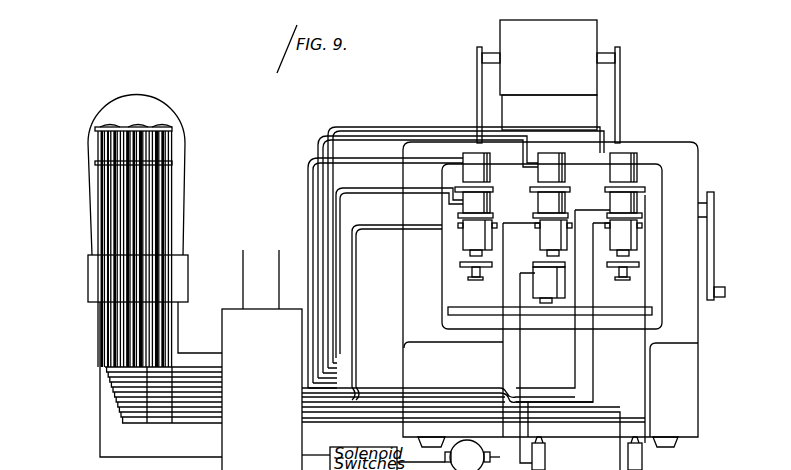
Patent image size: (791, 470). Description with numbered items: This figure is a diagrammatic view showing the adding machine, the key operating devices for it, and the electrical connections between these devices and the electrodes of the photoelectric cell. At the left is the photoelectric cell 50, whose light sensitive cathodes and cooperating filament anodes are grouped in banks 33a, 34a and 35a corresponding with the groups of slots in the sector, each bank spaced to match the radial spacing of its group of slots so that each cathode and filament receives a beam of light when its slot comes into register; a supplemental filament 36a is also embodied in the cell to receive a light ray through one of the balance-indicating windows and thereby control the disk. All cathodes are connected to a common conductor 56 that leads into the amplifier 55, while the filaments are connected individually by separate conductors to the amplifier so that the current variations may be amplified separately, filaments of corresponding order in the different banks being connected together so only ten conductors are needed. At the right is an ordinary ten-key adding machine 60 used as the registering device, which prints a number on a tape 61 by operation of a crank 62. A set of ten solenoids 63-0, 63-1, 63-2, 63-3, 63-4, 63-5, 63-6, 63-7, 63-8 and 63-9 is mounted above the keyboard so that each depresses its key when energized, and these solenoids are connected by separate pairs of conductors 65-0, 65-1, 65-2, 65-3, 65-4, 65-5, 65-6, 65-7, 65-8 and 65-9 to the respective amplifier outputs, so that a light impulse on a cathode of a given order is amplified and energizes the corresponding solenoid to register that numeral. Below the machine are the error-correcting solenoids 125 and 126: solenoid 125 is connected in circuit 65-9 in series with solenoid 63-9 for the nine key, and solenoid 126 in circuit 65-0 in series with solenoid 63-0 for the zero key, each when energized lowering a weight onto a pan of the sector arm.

The photoelectric cell 50 is at (128, 97).
The common conductor 56 is at (178, 174).
The bank of cathodes and filaments 33a is at (158, 125).
The bank of cathodes and filaments 34a is at (137, 122).
The bank of cathodes and filaments 35a is at (110, 125).
The supplemental filament 36a is at (97, 143).
The amplifier 55 is at (235, 322).
The adding machine 60 is at (688, 145).
The tape 61 is at (598, 101).
The crank 62 is at (708, 270).
The solenoid 63-0 is at (535, 283).
The solenoid 63-1 is at (490, 160).
The solenoid 63-2 is at (548, 154).
The solenoid 63-3 is at (625, 166).
The solenoid 63-4 is at (491, 191).
The solenoid 63-5 is at (558, 205).
The solenoid 63-6 is at (640, 208).
The solenoid 63-7 is at (468, 235).
The solenoid 63-8 is at (546, 236).
The solenoid 63-9 is at (613, 240).
The pair of conductors 65-0 is at (521, 371).
The pair of conductors 65-1 is at (337, 160).
The pair of conductors 65-2 is at (360, 116).
The pair of conductors 65-3 is at (408, 131).
The pair of conductors 65-4 is at (345, 190).
The pair of conductors 65-5 is at (420, 388).
The pair of conductors 65-6 is at (594, 376).
The pair of conductors 65-7 is at (380, 230).
The pair of conductors 65-8 is at (506, 357).
The pair of conductors 65-9 is at (650, 348).
The solenoid 125 is at (643, 458).
The solenoid 126 is at (546, 456).